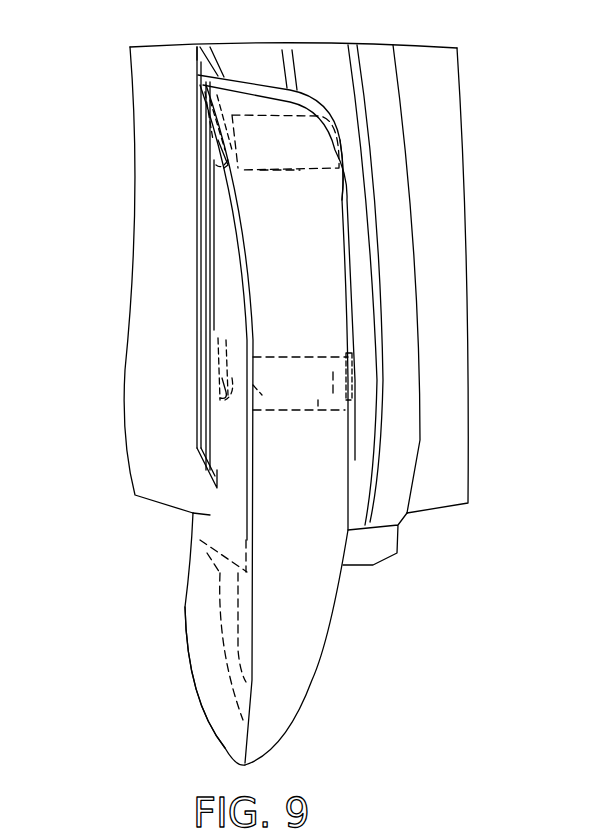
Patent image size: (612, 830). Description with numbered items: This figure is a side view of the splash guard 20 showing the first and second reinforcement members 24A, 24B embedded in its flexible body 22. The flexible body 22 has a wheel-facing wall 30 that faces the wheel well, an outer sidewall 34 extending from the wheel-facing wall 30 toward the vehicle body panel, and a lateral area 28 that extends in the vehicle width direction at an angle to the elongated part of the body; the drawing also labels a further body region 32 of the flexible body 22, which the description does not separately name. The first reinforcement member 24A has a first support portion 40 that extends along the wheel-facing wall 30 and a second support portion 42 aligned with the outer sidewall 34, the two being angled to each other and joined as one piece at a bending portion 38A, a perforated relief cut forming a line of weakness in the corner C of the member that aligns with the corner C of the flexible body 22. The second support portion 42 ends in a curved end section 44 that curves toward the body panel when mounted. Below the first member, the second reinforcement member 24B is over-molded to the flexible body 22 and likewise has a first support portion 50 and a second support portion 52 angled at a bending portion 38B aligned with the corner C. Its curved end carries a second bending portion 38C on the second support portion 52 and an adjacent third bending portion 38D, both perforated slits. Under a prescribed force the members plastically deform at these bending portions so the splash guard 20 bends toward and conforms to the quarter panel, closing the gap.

The splash guard 20 is at (175, 293).
The flexible body 22 is at (186, 602).
The first reinforcement member 24A is at (188, 128).
The second reinforcement member 24B is at (188, 353).
The lateral area 28 is at (207, 448).
The wheel-facing wall 30 is at (210, 515).
The outer panel 32 is at (215, 72).
The outer sidewall 34 is at (255, 78).
The bending portion 38A is at (233, 143).
The bending portion 38B is at (262, 395).
The second bending portion 38C is at (330, 371).
The third bending portion 38D is at (356, 368).
The first support portion 40 is at (223, 160).
The second support portion 42 is at (276, 172).
The curved end section 44 is at (337, 143).
The first support portion 50 is at (222, 392).
The second support portion 52 is at (318, 412).
The corner C is at (253, 282).